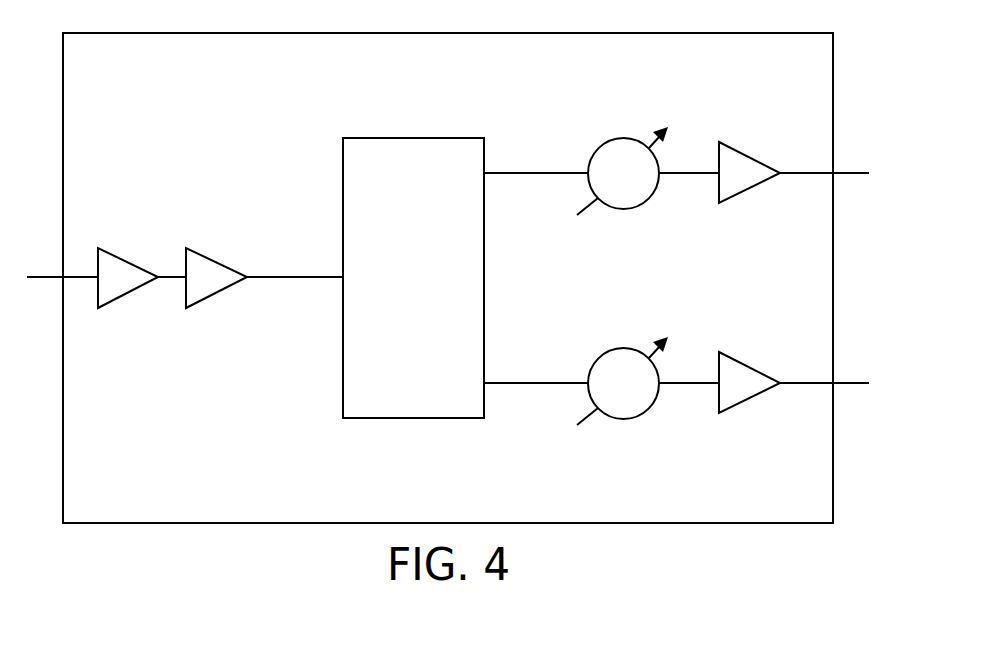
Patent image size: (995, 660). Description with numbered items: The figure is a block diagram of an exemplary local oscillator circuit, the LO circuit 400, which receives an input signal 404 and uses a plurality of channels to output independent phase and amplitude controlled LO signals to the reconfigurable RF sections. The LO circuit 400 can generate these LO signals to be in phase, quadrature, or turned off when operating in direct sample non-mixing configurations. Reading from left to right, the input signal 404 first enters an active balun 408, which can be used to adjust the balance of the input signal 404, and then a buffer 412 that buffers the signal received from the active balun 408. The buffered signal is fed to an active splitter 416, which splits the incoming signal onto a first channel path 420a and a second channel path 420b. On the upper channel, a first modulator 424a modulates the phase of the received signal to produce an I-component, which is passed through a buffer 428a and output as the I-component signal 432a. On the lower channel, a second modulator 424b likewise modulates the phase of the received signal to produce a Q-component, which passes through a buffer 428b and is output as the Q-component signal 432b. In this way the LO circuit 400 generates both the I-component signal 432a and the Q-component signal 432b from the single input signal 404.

The LO circuit 400 is at (468, 19).
The input signal 404 is at (47, 278).
The active balun 408 is at (118, 258).
The buffer 412 is at (213, 260).
The active splitter 416 is at (410, 138).
The first channel path 420a is at (555, 173).
The second channel path 420b is at (553, 383).
The first modulator 424a is at (598, 148).
The second modulator 424b is at (599, 358).
The buffer 428a is at (753, 159).
The buffer 428b is at (750, 400).
The I-component signal 432a is at (850, 173).
The Q-component signal 432b is at (848, 383).